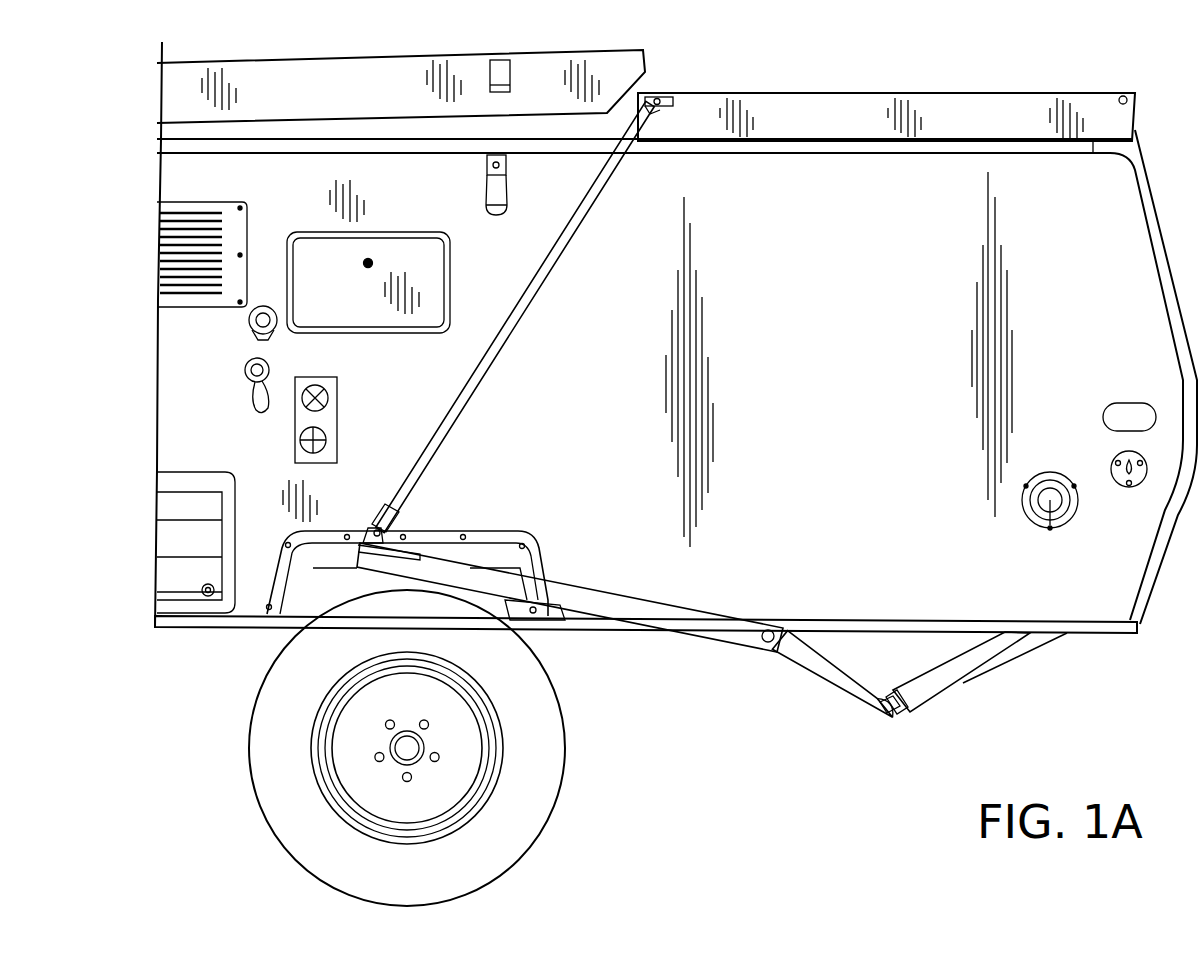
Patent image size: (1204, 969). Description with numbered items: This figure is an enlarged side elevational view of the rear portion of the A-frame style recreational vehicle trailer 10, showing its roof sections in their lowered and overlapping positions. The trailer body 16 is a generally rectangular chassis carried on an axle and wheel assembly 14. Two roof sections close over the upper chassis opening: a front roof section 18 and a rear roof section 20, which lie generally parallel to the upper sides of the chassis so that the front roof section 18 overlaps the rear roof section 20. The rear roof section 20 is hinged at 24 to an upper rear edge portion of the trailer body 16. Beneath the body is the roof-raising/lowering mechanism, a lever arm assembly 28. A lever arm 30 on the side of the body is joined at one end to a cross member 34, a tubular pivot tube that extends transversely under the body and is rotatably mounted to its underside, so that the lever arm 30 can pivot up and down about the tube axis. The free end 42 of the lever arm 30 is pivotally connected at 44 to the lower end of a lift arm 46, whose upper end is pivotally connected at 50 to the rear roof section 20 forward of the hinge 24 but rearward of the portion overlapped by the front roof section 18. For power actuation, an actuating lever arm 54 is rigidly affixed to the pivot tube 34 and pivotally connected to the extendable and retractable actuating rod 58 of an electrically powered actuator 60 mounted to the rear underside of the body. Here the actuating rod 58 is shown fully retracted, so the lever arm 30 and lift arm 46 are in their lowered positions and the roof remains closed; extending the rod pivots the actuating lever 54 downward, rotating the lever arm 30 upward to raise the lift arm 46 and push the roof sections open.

The recreational vehicle trailer 10 is at (582, 41).
The axle and wheel assembly 14 is at (578, 769).
The trailer body 16 is at (808, 417).
The front roof section 18 is at (397, 55).
The rear roof section 20 is at (875, 93).
The hinge 24 is at (1122, 96).
The lever arm assembly 28 is at (712, 631).
The lever arm 30 is at (575, 572).
The cross member 34 is at (772, 630).
The free end 42 is at (416, 550).
The pivotal connection 44 is at (377, 526).
The lift arm 46 is at (561, 288).
The pivotal connection 50 is at (655, 97).
The actuating lever arm 54 is at (833, 682).
The actuating rod 58 is at (903, 712).
The electrically powered actuator 60 is at (965, 684).